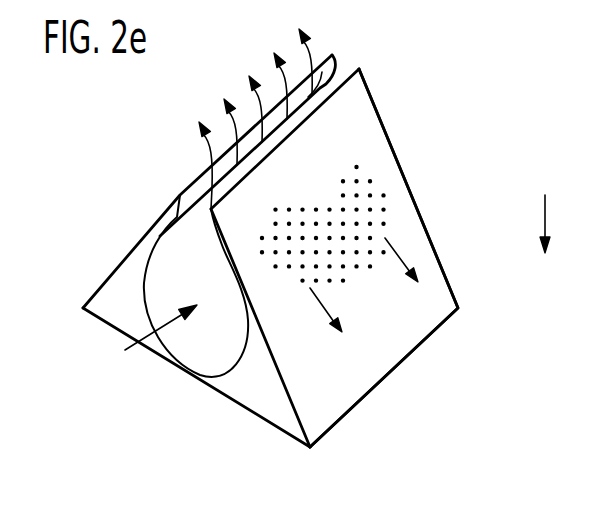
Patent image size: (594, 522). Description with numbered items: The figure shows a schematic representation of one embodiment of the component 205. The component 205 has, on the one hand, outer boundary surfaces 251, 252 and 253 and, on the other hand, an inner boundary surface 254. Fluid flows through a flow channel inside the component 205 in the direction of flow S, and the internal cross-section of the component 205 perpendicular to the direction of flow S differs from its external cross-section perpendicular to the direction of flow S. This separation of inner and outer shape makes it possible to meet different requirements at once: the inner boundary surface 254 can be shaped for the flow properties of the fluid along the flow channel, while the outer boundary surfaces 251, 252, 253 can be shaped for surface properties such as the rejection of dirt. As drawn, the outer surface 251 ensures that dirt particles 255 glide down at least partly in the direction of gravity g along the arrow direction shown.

The component 205 is at (252, 432).
The outer boundary surface 251 is at (418, 332).
The outer boundary surface 252 is at (113, 268).
The outer boundary surface 253 is at (193, 383).
The inner boundary surface 254 is at (250, 337).
The dirt particles 255 is at (371, 181).
The direction of flow S is at (161, 343).
The direction of gravity g is at (555, 224).